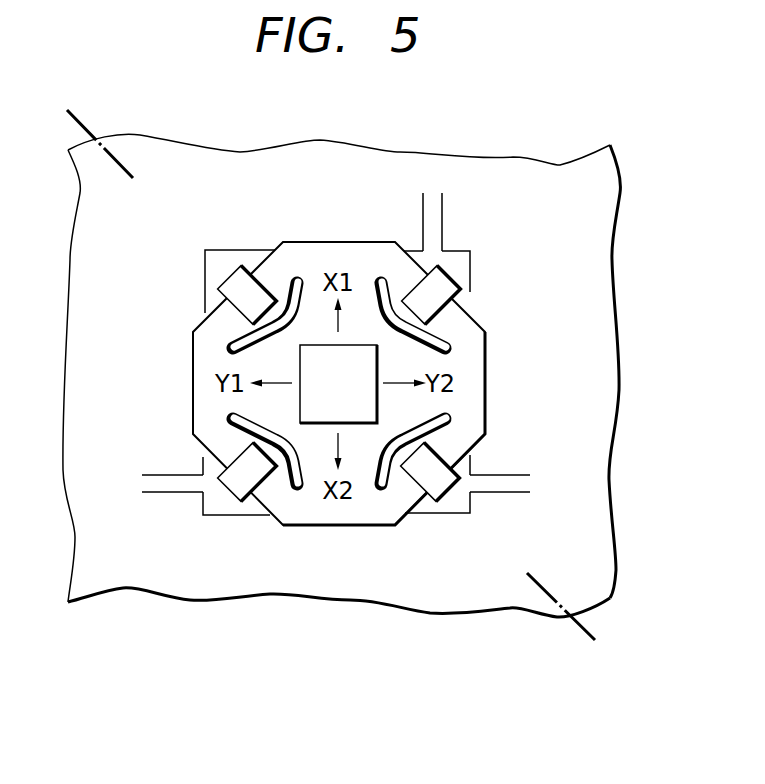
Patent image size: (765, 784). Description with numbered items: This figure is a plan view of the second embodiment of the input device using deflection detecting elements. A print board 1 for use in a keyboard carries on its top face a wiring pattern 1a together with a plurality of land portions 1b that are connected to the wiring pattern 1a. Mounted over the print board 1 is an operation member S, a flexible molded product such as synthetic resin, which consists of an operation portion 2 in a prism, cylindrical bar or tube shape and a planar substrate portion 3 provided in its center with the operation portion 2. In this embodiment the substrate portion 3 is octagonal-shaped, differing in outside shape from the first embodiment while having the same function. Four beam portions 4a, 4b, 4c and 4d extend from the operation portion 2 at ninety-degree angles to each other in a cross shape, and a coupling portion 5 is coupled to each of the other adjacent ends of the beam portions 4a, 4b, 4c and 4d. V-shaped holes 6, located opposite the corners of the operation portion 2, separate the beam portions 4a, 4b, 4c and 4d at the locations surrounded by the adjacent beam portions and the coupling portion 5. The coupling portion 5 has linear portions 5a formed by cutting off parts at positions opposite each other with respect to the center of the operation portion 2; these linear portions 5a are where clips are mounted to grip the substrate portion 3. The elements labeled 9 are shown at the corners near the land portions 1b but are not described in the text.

The print board 1 is at (587, 167).
The wiring pattern 1a is at (437, 207).
The land portions 1b is at (470, 290).
The operation portion 2 is at (320, 405).
The substrate portion 3 is at (375, 236).
The beam portion 4a is at (365, 457).
The beam portion 4b is at (311, 302).
The beam portion 4c is at (420, 407).
The beam portion 4d is at (257, 397).
The coupling portion 5 is at (272, 268).
The linear portions 5a is at (217, 300).
The V-shaped holes 6 is at (398, 556).
The solder 9 is at (440, 282).
The operation member S is at (186, 447).